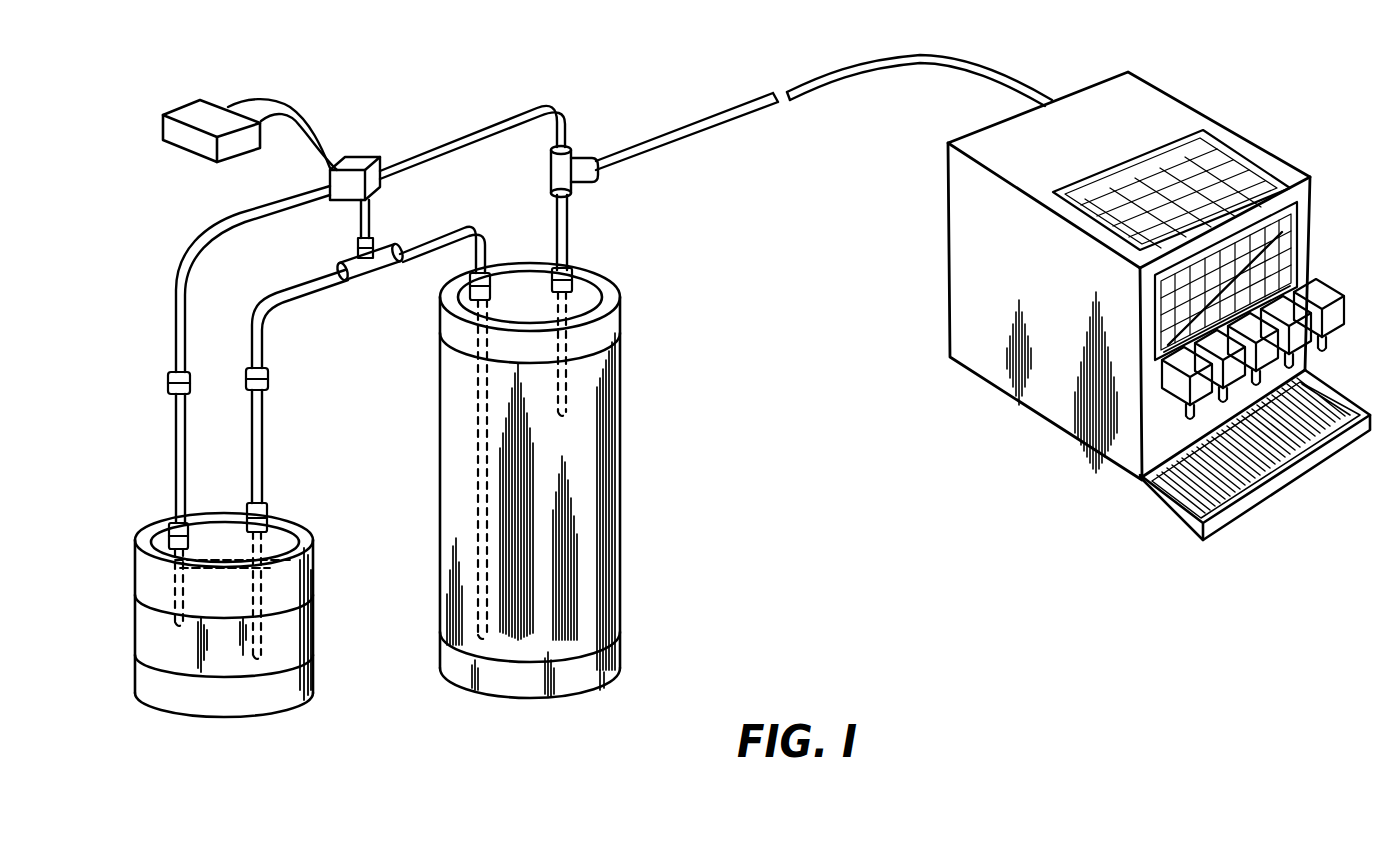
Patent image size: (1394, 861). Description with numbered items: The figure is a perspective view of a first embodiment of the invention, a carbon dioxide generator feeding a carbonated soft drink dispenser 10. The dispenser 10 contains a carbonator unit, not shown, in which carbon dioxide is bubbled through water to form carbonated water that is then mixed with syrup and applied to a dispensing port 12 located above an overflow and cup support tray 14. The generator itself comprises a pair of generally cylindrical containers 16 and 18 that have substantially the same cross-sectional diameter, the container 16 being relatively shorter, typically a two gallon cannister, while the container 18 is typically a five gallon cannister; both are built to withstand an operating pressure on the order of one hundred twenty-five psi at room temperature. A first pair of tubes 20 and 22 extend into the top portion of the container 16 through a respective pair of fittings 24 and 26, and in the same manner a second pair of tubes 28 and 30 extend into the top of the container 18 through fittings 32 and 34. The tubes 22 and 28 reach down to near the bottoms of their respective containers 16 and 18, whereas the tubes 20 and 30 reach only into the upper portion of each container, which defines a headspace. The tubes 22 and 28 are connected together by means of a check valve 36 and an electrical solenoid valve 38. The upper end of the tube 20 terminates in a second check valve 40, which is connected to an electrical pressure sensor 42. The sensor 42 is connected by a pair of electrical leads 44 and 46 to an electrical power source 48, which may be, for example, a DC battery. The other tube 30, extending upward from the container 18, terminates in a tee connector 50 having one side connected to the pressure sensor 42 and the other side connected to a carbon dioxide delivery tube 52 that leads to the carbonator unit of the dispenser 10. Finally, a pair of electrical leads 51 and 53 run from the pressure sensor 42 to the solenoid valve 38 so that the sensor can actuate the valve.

The carbonated soft drink dispenser 10 is at (1085, 105).
The dispensing port 12 is at (1117, 468).
The overflow and cup support tray 14 is at (1185, 500).
The container 16 is at (140, 640).
The container 18 is at (598, 478).
The tube 20 is at (182, 467).
The tube 22 is at (260, 458).
The fitting 24 is at (166, 537).
The fitting 26 is at (267, 514).
The tube 28 is at (470, 418).
The tube 30 is at (567, 393).
The fitting 32 is at (462, 283).
The fitting 34 is at (580, 273).
The check valve 36 is at (266, 375).
The electrical solenoid valve 38 is at (364, 283).
The second check valve 40 is at (188, 382).
The electrical pressure sensor 42 is at (357, 163).
The electrical lead 44 is at (307, 118).
The electrical lead 46 is at (302, 133).
The electrical power source 48 is at (185, 137).
The tee connector 50 is at (577, 160).
The electrical lead 51 is at (360, 213).
The CO2 delivery tube 52 is at (713, 115).
The electrical lead 53 is at (372, 224).